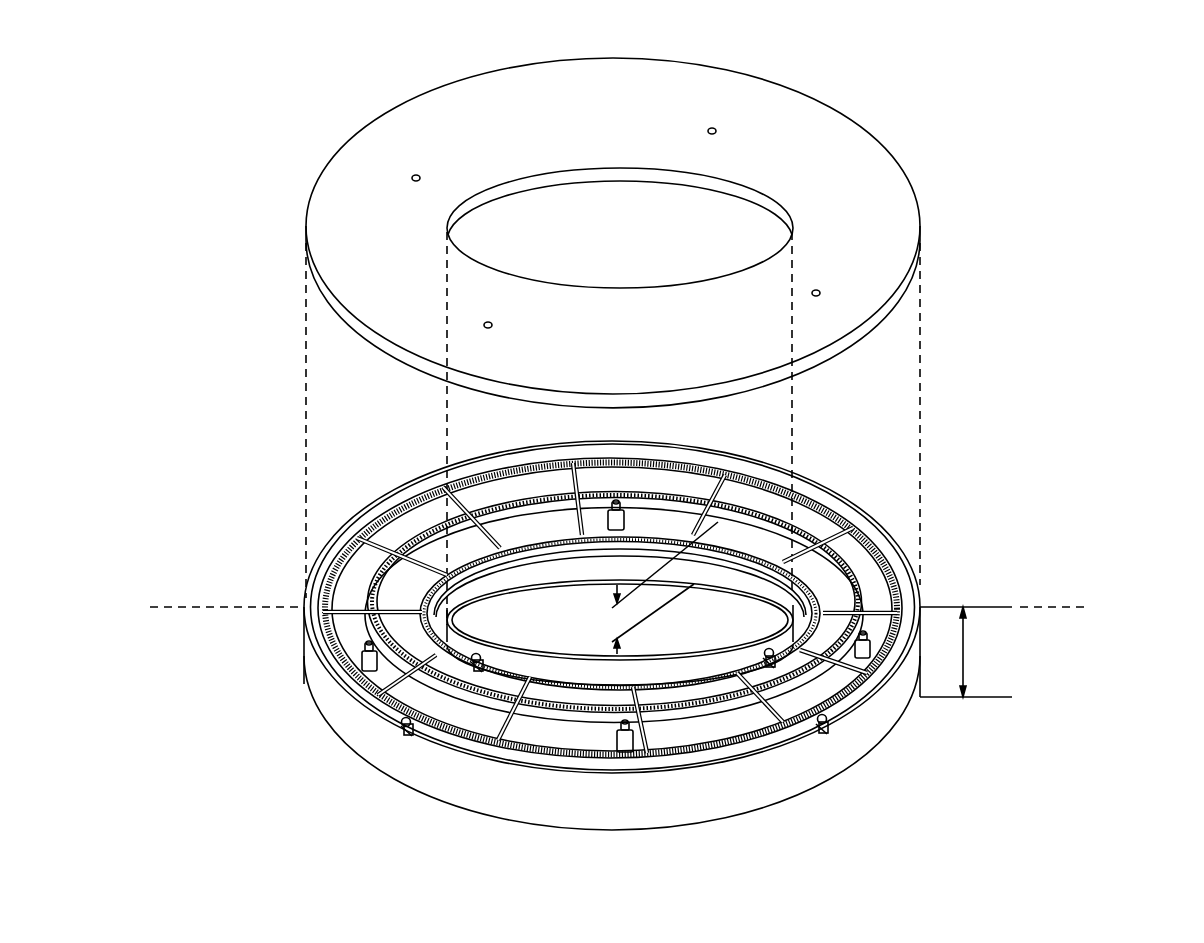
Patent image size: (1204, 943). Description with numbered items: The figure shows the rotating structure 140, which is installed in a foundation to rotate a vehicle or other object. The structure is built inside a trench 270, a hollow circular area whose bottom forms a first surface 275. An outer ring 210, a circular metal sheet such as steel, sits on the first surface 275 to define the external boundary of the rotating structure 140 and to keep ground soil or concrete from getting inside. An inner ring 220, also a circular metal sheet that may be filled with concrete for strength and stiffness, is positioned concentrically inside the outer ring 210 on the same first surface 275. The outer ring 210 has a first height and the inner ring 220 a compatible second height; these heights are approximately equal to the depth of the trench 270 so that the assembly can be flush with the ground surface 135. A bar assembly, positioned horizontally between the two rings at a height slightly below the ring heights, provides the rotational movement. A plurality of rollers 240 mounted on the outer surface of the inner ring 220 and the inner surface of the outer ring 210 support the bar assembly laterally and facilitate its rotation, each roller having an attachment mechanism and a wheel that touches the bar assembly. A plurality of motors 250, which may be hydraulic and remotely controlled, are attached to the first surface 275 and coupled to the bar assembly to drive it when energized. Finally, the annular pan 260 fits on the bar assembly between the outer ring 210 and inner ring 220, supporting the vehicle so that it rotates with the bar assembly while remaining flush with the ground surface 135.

The rotating structure 140 is at (1018, 88).
The pan 260 is at (903, 181).
The outer ring 210 is at (763, 466).
The inner ring 220 is at (850, 528).
The trench 270 is at (355, 523).
The first surface 275 is at (314, 592).
The rollers 240 is at (475, 670).
The motors 250 is at (633, 742).
The ground surface 135 is at (1037, 605).